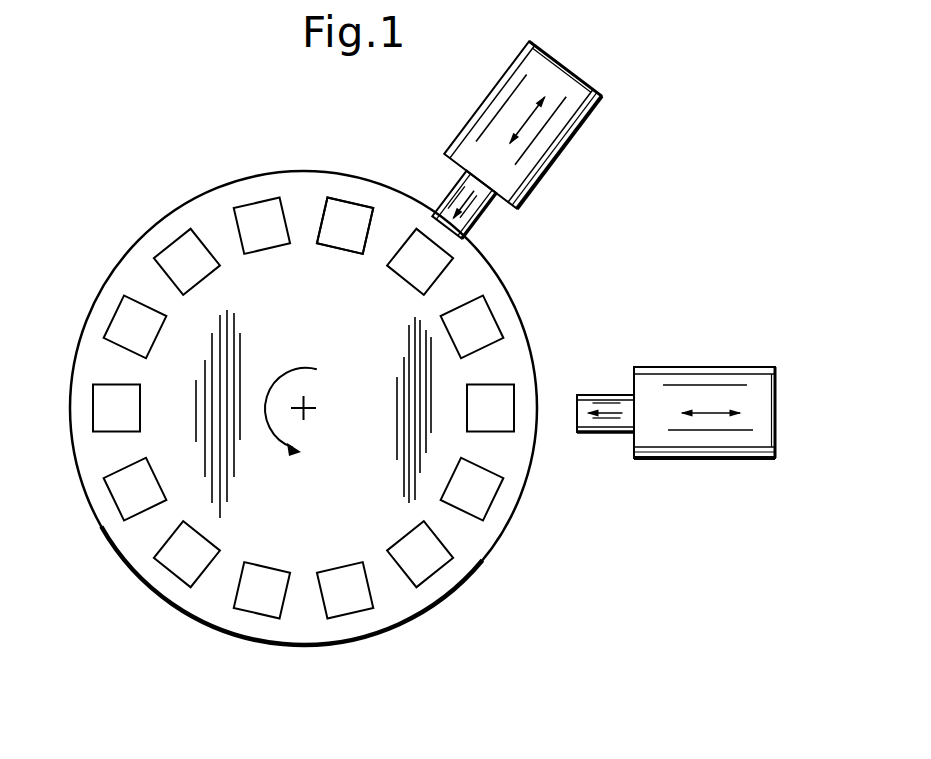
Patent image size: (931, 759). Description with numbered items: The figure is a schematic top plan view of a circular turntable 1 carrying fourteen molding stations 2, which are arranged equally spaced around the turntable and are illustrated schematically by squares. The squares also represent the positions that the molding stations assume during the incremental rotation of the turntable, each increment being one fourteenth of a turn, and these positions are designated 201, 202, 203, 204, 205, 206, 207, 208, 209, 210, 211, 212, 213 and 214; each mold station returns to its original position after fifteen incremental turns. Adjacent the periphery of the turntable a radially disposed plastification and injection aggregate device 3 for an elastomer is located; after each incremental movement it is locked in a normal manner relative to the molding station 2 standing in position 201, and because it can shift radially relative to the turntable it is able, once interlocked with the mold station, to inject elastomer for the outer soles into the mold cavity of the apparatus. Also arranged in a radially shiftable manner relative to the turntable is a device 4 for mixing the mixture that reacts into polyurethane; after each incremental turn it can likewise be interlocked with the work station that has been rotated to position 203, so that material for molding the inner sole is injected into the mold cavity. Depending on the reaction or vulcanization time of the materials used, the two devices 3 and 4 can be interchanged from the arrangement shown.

The turntable 1 is at (300, 183).
The molding station 2 is at (360, 208).
The plastification and injection aggregate device 3 is at (695, 437).
The mixing device 4 is at (552, 127).
The molding station position 201 is at (502, 398).
The molding station position 202 is at (480, 322).
The molding station position 203 is at (413, 240).
The molding station position 204 is at (335, 207).
The molding station position 205 is at (257, 212).
The molding station position 206 is at (183, 237).
The molding station position 207 is at (132, 308).
The molding station position 208 is at (102, 395).
The molding station position 209 is at (125, 487).
The molding station position 210 is at (177, 560).
The molding station position 211 is at (267, 603).
The molding station position 212 is at (355, 595).
The molding station position 213 is at (430, 550).
The molding station position 214 is at (480, 490).